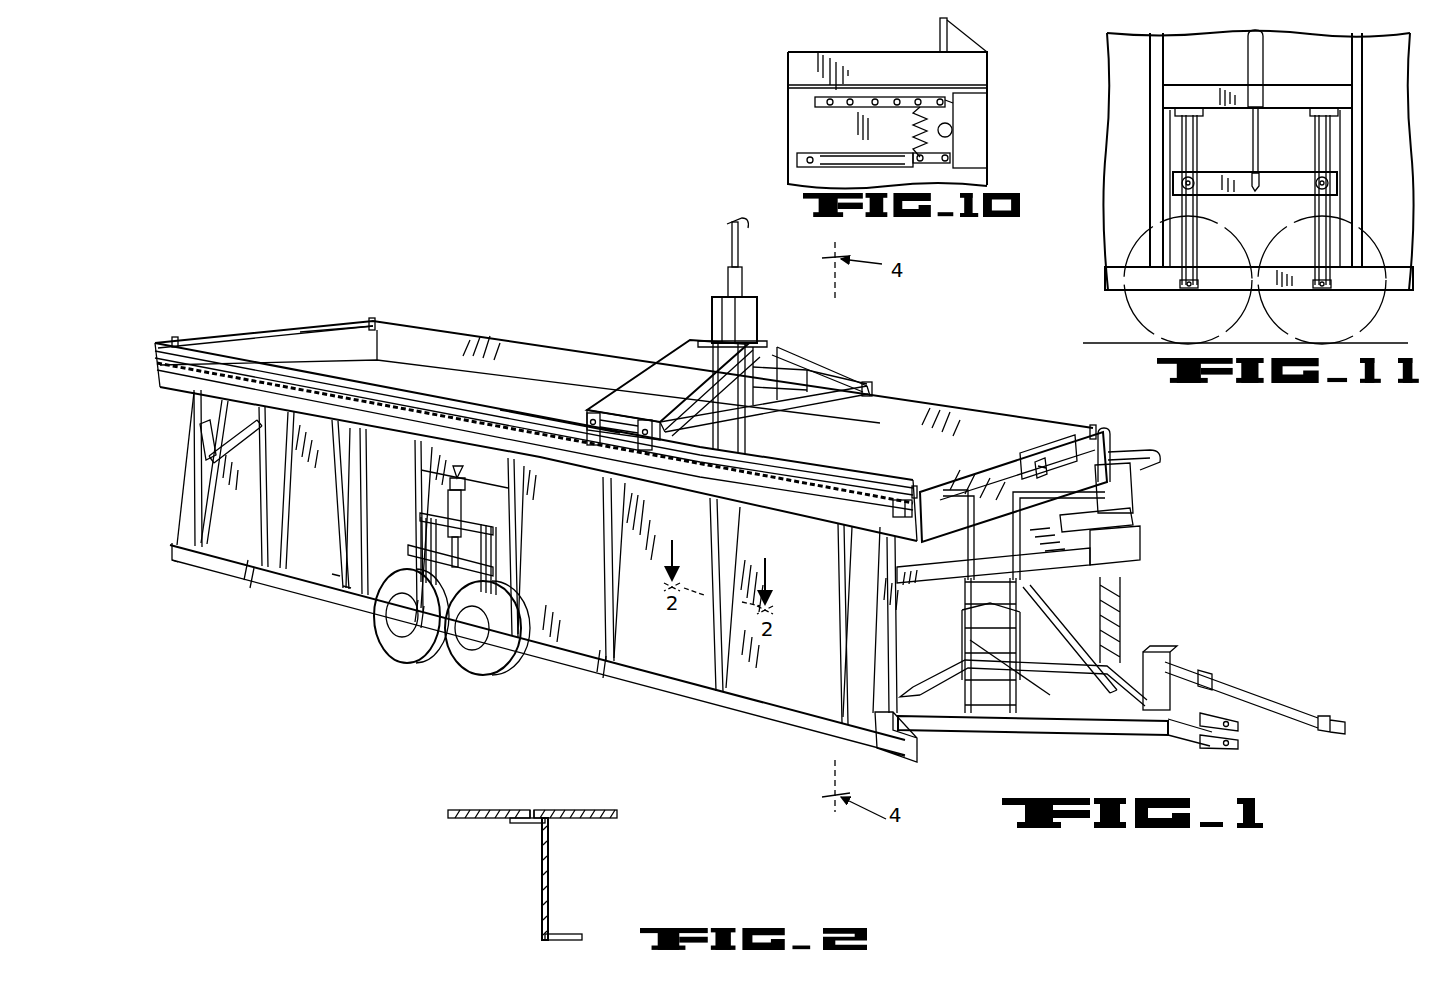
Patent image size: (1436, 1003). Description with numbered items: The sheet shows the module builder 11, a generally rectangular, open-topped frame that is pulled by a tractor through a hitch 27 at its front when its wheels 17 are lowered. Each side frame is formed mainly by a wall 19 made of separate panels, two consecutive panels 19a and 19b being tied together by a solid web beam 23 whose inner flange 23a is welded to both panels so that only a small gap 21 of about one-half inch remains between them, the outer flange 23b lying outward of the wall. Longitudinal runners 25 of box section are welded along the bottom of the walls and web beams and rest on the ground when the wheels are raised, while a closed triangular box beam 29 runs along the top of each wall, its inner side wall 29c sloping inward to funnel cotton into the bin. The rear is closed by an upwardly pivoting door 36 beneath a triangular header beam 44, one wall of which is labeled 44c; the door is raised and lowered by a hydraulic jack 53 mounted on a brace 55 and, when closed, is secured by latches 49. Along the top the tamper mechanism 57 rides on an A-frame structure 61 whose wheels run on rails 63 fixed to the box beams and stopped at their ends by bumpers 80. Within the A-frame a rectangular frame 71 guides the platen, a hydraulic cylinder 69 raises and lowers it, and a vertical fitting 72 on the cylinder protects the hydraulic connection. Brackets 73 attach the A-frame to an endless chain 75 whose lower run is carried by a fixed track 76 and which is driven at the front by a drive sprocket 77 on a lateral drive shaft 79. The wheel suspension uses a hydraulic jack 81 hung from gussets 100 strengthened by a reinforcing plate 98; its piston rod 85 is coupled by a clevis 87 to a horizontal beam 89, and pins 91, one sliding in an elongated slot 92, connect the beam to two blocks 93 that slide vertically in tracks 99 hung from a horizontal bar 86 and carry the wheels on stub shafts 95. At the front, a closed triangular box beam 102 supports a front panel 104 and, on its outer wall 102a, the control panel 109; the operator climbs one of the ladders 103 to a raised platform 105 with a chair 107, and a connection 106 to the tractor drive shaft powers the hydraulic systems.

In FIG. 1, the module builder 11 is at (553, 272).
In FIG. 1, the wheels 17 is at (478, 661).
In FIG. 11, the wheels 17 is at (1126, 314).
In FIG. 1, the wall 19 is at (850, 458).
In FIG. 11, the wall 19 is at (1113, 78).
In FIG. 2, the panel 19a is at (455, 812).
In FIG. 2, the panel 19b is at (615, 812).
In FIG. 2, the gap 21 is at (531, 809).
In FIG. 1, the web beam 23 is at (418, 480).
In FIG. 11, the web beam 23 is at (1150, 40).
In FIG. 2, the web beam 23 is at (541, 874).
In FIG. 1, the inner flange 23a is at (334, 578).
In FIG. 2, the inner flange 23a is at (525, 826).
In FIG. 1, the outer flange 23b is at (346, 586).
In FIG. 2, the outer flange 23b is at (565, 934).
In FIG. 1, the longitudinal runner 25 is at (572, 661).
In FIG. 11, the longitudinal runner 25 is at (1105, 280).
In FIG. 1, the hitch 27 is at (1225, 746).
In FIG. 1, the closed triangular box beam 29 is at (165, 377).
In FIG. 10, the closed triangular box beam 29 is at (790, 98).
In FIG. 1, the inner side wall 29c is at (560, 348).
In FIG. 1, the door 36 is at (382, 359).
In FIG. 1, the closed triangular box beam 44 is at (272, 333).
In FIG. 1, the rail section 44c is at (332, 332).
In FIG. 1, the latches 49 is at (182, 514).
In FIG. 1, the hydraulic jack 53 is at (203, 436).
In FIG. 1, the brace 55 is at (248, 456).
In FIG. 1, the tamper mechanism 57 is at (711, 296).
In FIG. 1, the A-frame structure 61 is at (814, 354).
In FIG. 1, the rails 63 is at (497, 345).
In FIG. 10, the rails 63 is at (793, 66).
In FIG. 1, the hydraulic cylinder 69 is at (744, 281).
In FIG. 1, the rectangular frame 71 is at (761, 319).
In FIG. 1, the fitting 72 is at (732, 238).
In FIG. 1, the brackets 73 is at (645, 440).
In FIG. 1, the endless chain 75 is at (796, 485).
In FIG. 10, the endless chain 75 is at (836, 106).
In FIG. 10, the fixed track 76 is at (806, 161).
In FIG. 10, the drive sprocket 77 is at (912, 131).
In FIG. 10, the drive shaft 79 is at (953, 131).
In FIG. 1, the bumpers 80 is at (176, 338).
In FIG. 10, the bumpers 80 is at (940, 31).
In FIG. 1, the hydraulic jack 81 is at (465, 511).
In FIG. 11, the hydraulic jack 81 is at (1262, 53).
In FIG. 1, the piston rod 85 is at (425, 536).
In FIG. 11, the piston rod 85 is at (1252, 131).
In FIG. 1, the horizontal bar 86 is at (428, 521).
In FIG. 11, the horizontal bar 86 is at (1205, 90).
In FIG. 11, the clevis 87 is at (1255, 191).
In FIG. 1, the beam 89 is at (495, 573).
In FIG. 11, the beam 89 is at (1283, 176).
In FIG. 11, the pins 91 is at (1193, 181).
In FIG. 11, the elongated slot 92 is at (1182, 180).
In FIG. 1, the blocks 93 is at (425, 561).
In FIG. 11, the blocks 93 is at (1190, 249).
In FIG. 11, the stub shafts 95 is at (1188, 291).
In FIG. 1, the reinforcing plate 98 is at (450, 458).
In FIG. 11, the tracks 99 is at (1180, 128).
In FIG. 1, the gussets 100 is at (500, 478).
In FIG. 11, the gussets 100 is at (1208, 45).
In FIG. 1, the closed triangular box beam 102 is at (1090, 446).
In FIG. 1, the outer wall 102a is at (1106, 453).
In FIG. 1, the ladders 103 is at (990, 703).
In FIG. 1, the panel 104 is at (902, 658).
In FIG. 1, the raised platform 105 is at (990, 563).
In FIG. 1, the connection 106 is at (1240, 692).
In FIG. 1, the chair 107 is at (1128, 501).
In FIG. 1, the control panel 109 is at (1043, 466).